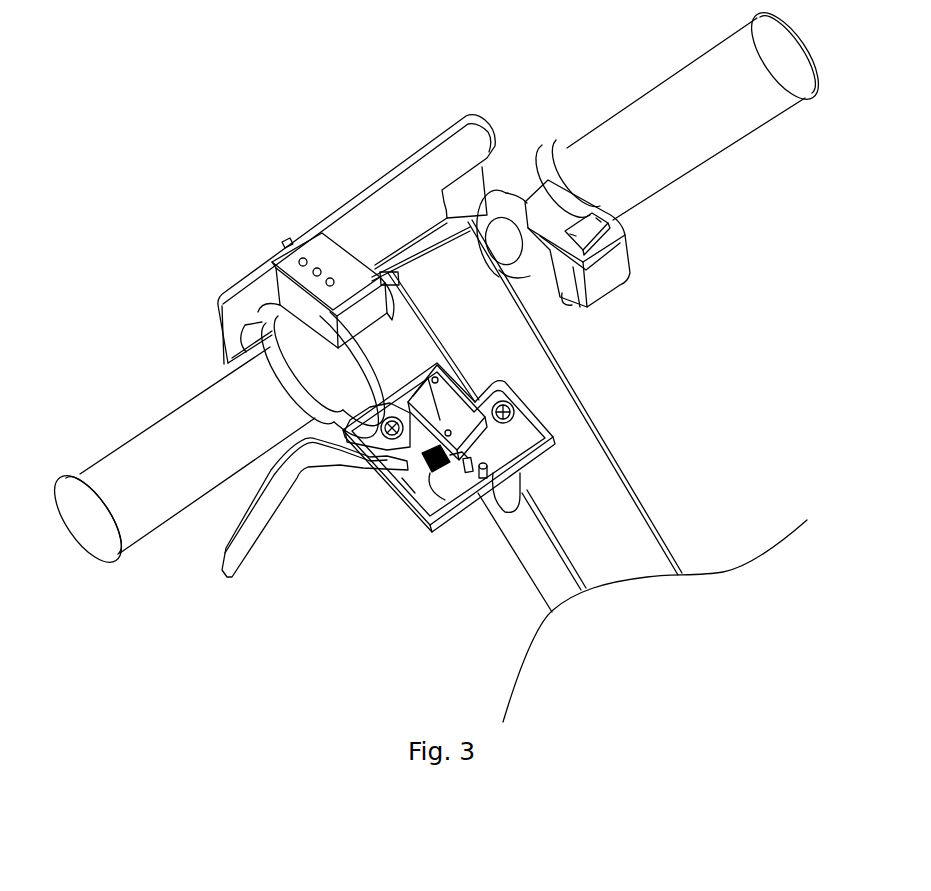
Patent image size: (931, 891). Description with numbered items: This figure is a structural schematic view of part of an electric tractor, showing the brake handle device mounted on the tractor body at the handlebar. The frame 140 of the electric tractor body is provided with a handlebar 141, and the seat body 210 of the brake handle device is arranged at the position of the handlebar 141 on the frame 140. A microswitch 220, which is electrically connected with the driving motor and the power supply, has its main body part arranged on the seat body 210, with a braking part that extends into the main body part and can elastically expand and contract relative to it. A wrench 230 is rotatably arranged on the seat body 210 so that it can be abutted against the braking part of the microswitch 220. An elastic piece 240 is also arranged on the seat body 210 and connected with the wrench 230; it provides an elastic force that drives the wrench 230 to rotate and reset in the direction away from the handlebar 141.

The frame 140 is at (598, 475).
The handlebar 141 is at (187, 440).
The seat body 210 is at (453, 488).
The microswitch 220 is at (437, 408).
The wrench 230 is at (273, 497).
The elastic piece 240 is at (420, 473).